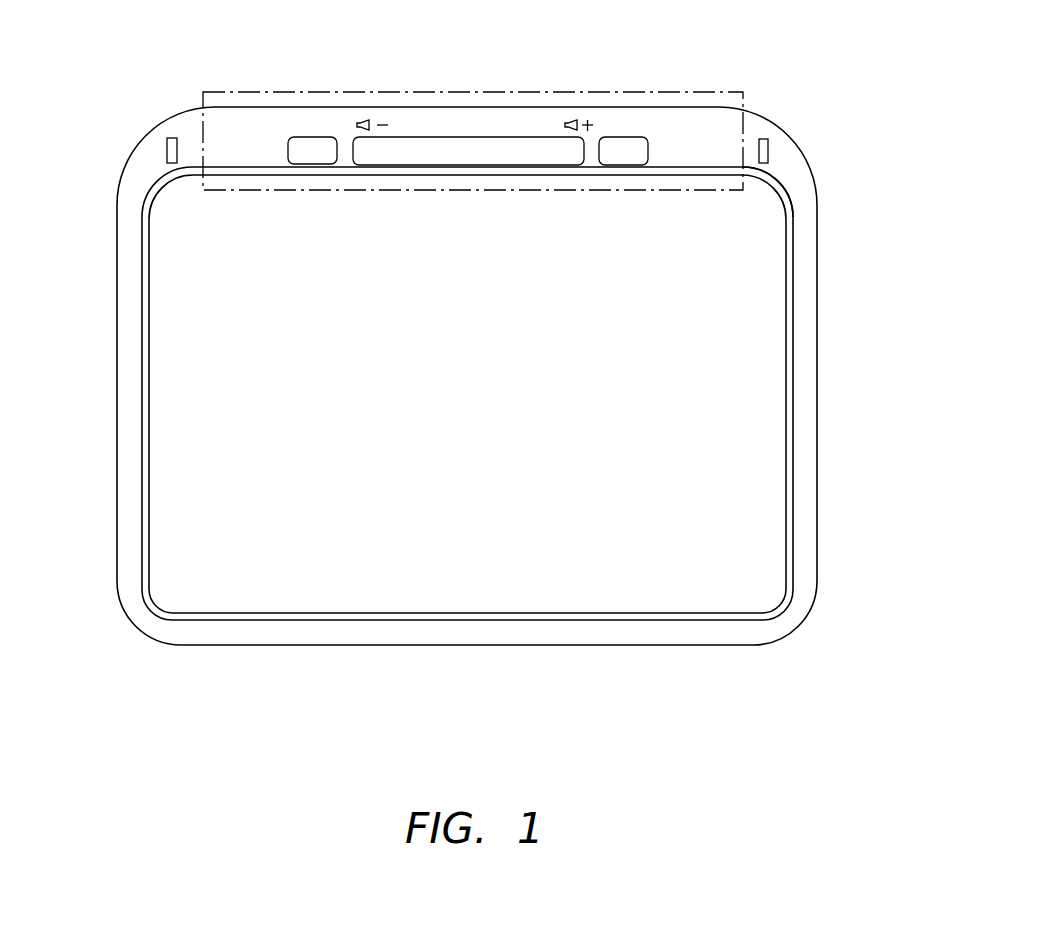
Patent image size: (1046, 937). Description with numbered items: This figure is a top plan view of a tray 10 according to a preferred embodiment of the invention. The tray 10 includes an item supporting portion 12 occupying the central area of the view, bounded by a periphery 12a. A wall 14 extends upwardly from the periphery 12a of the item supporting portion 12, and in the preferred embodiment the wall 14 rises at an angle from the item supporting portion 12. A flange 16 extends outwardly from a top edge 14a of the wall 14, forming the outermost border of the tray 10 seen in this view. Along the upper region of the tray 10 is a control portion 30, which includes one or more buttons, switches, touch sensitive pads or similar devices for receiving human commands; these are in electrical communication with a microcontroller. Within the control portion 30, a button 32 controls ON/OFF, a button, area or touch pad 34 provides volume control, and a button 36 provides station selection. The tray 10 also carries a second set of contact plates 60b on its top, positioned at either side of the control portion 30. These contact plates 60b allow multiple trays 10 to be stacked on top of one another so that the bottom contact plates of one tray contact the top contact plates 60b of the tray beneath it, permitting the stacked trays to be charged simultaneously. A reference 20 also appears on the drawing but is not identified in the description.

The tray 10 is at (720, 673).
The item supporting portion 12 is at (612, 401).
The periphery 12a is at (788, 262).
The wall 14 is at (787, 477).
The top edge 14a is at (792, 210).
The flange 16 is at (803, 358).
The housing assembly 20 is at (170, 80).
The control portion 30 is at (743, 100).
The button 32 is at (313, 158).
The button, area or touch pad 34 is at (453, 155).
The button 36 is at (625, 155).
The second set of contact plates 60b is at (167, 148).